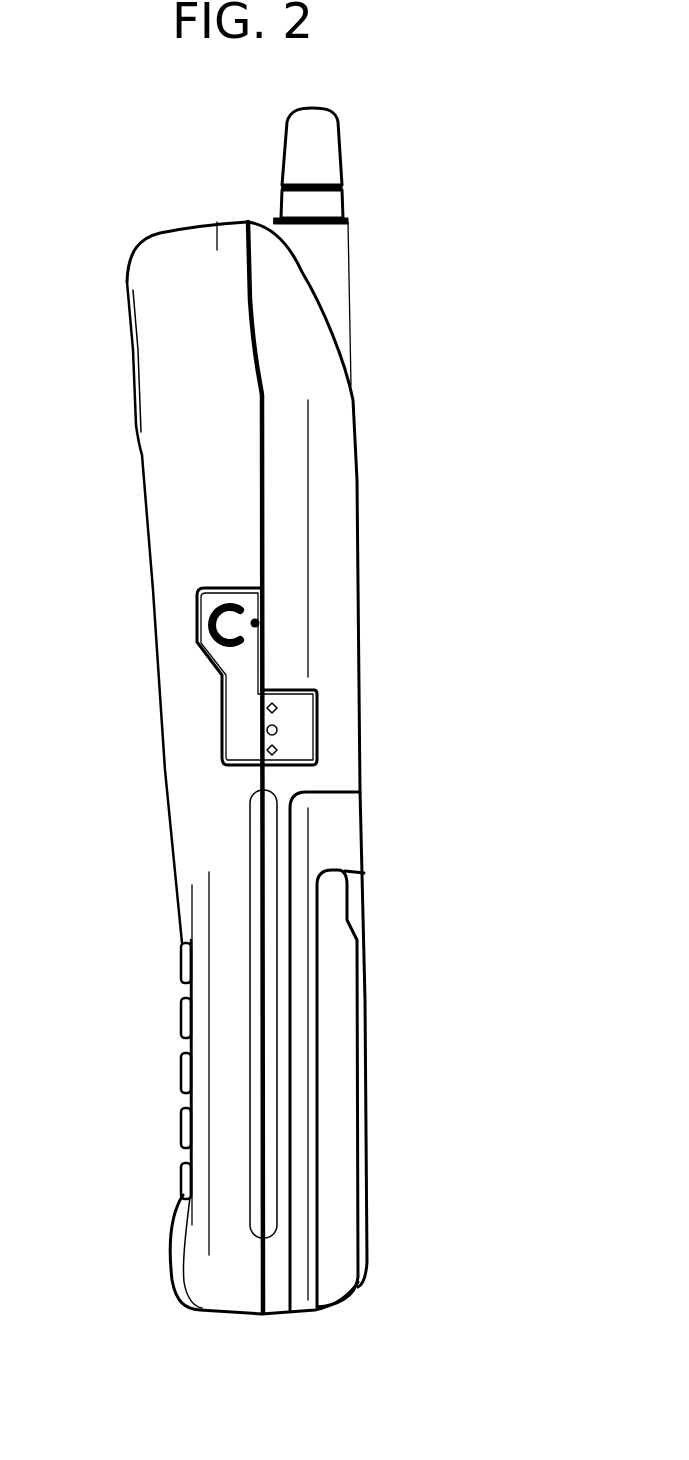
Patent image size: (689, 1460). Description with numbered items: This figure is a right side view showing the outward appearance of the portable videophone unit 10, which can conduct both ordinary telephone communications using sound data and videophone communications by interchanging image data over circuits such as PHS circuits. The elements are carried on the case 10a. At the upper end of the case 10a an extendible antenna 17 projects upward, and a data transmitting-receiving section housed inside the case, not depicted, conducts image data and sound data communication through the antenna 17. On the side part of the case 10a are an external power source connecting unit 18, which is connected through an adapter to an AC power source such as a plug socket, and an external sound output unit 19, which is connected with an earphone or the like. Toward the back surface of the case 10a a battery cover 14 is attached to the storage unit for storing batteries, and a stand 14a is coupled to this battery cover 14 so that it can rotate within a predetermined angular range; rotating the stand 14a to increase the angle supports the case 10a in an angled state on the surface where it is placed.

The portable videophone unit 10 is at (463, 215).
The case 10a is at (358, 556).
The extendible antenna 17 is at (332, 155).
The external power source connecting unit 18 is at (305, 710).
The external sound output unit 19 is at (205, 625).
The battery cover 14 is at (338, 836).
The stand 14a is at (347, 1153).